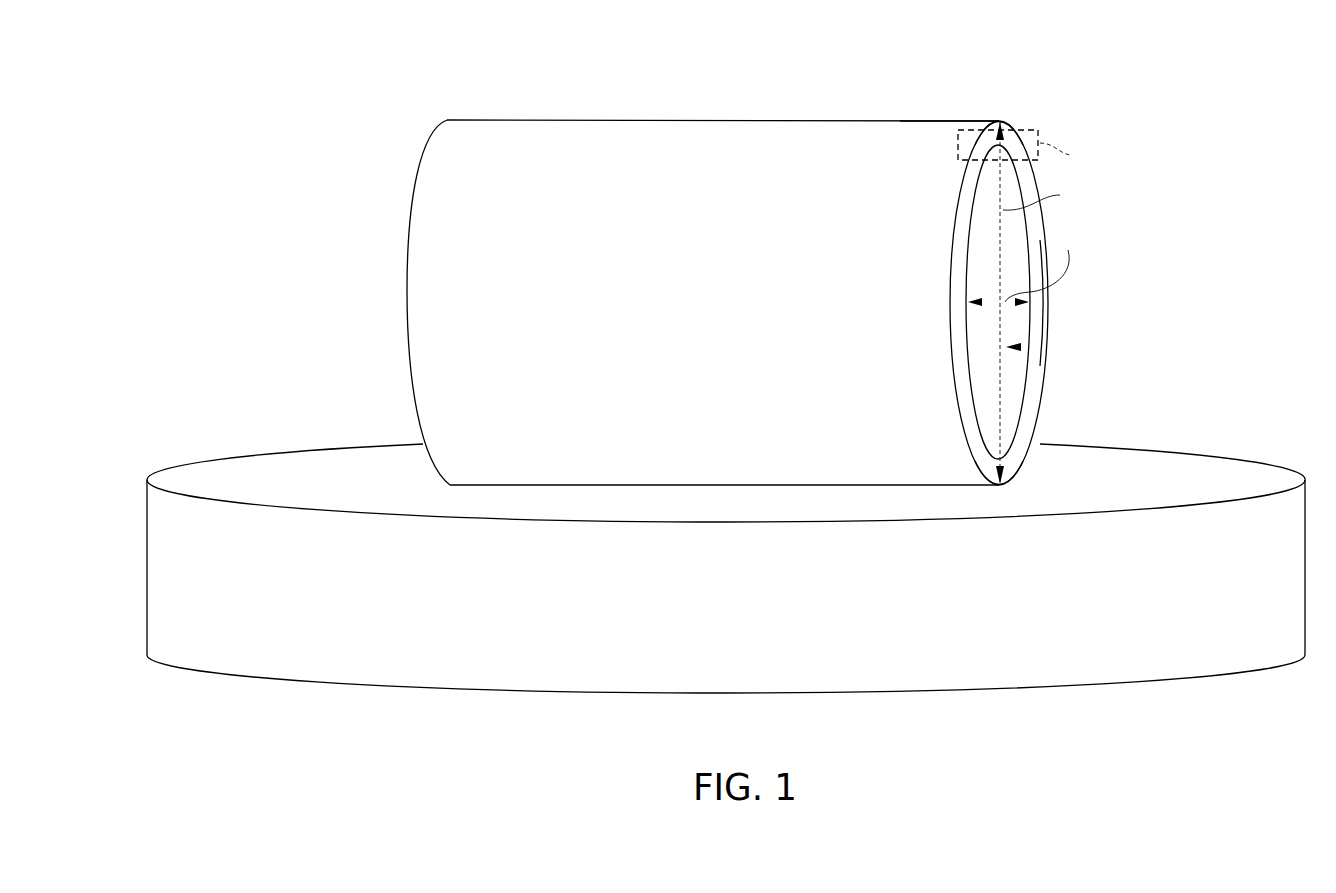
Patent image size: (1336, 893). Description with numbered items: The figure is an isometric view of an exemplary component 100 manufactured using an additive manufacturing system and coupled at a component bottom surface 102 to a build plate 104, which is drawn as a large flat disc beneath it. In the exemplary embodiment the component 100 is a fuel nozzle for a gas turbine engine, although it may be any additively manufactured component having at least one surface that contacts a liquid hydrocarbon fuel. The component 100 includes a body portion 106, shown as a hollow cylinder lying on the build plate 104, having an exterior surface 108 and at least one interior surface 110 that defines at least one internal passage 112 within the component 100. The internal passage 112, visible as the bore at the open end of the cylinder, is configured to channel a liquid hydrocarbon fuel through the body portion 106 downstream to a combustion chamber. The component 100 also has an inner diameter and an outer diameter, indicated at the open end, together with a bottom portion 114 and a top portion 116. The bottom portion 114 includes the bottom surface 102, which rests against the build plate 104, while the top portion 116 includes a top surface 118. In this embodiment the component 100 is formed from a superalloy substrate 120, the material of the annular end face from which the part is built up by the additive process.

The component 100 is at (717, 307).
The component bottom surface 102 is at (490, 498).
The build plate 104 is at (708, 625).
The body portion 106 is at (462, 274).
The exterior surface 108 is at (752, 142).
The interior surface 110 is at (1008, 393).
The internal passage 112 is at (1048, 350).
The bottom portion 114 is at (1012, 492).
The top portion 116 is at (1016, 113).
The top surface 118 is at (925, 118).
The superalloy substrate 120 is at (1012, 476).